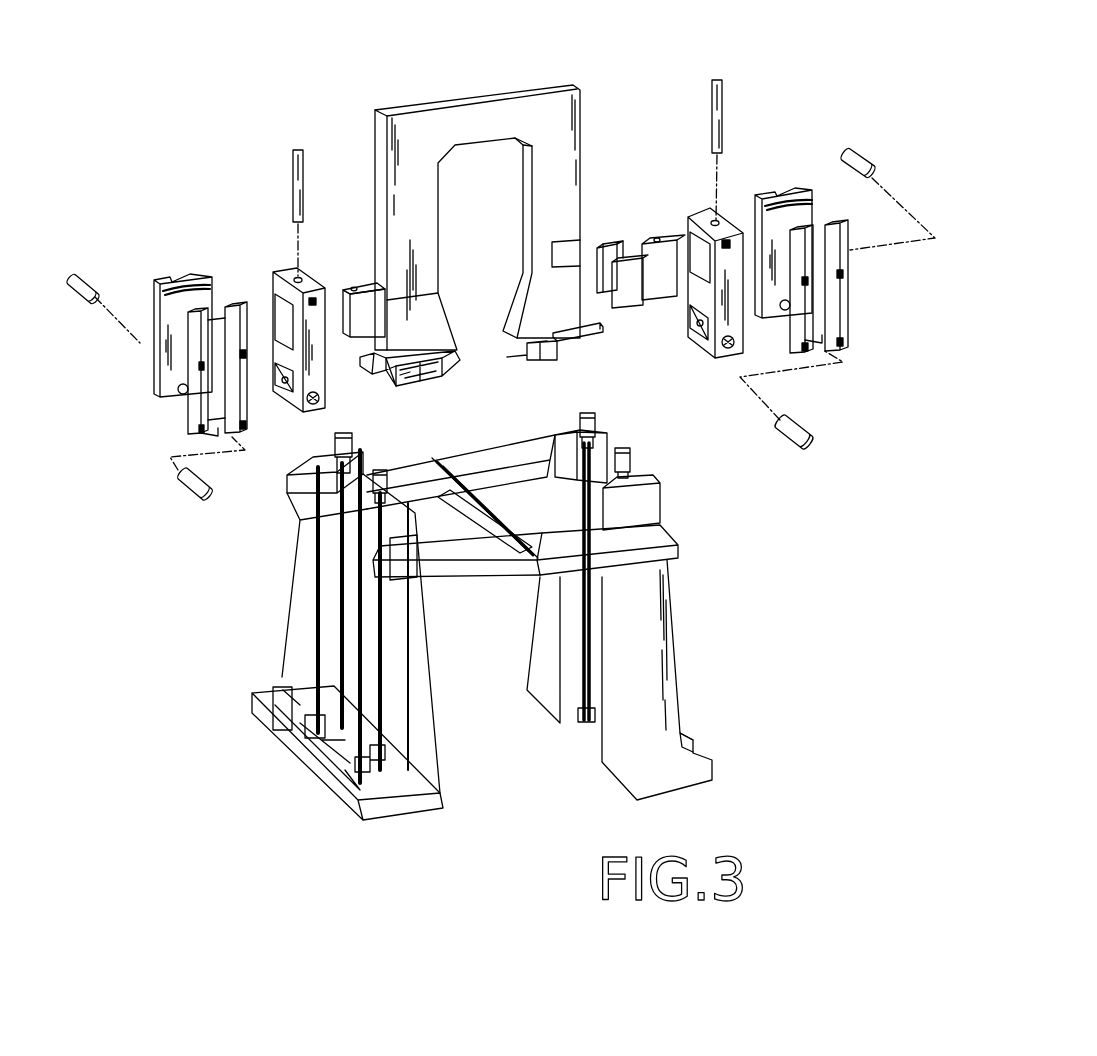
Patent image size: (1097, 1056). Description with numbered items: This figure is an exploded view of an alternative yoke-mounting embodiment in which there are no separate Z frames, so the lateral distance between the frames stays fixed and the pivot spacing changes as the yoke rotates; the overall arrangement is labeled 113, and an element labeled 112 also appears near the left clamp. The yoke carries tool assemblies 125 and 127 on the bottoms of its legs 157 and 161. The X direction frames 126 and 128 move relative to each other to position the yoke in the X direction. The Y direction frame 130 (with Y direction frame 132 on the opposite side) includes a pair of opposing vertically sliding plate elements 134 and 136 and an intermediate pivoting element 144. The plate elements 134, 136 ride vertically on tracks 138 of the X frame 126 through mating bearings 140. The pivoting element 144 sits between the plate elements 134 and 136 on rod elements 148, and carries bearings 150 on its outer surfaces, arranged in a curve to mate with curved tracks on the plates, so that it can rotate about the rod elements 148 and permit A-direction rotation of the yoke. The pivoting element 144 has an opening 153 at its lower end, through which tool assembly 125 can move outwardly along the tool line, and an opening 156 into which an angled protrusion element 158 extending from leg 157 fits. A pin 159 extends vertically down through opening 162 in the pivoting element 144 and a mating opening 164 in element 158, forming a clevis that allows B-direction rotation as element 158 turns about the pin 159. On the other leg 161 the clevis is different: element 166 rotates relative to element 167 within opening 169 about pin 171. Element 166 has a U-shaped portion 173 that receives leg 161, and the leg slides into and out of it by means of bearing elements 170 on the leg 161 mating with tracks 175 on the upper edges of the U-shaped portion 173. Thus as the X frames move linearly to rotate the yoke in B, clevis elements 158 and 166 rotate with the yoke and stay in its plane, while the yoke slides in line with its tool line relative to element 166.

The tool head assembly 113 is at (498, 76).
The leg 161 is at (571, 178).
The bearing elements 170 is at (568, 268).
The leg 157 is at (420, 238).
The mating opening 164 is at (347, 287).
The angled protrusion element 158 is at (375, 320).
The tool assembly 125 is at (453, 377).
The tool assembly 127 is at (557, 354).
The Y direction frame 130 is at (293, 237).
The plate element 134 is at (148, 305).
The bearings 140 is at (150, 343).
The guide bar 112 is at (250, 323).
The plate element 136 is at (250, 423).
The rod elements 148 is at (77, 277).
The bearings 150 is at (313, 289).
The opening 162 is at (303, 275).
The opening 156 is at (275, 294).
The opening 153 is at (283, 392).
The pivoting element 144 is at (330, 378).
The pin 159 is at (300, 150).
The Y direction frame 132 is at (813, 170).
The element 167 is at (723, 327).
The opening 169 is at (700, 240).
The pin 171 is at (724, 108).
The element 166 is at (663, 300).
The mating tracks 175 is at (643, 253).
The U-shaped portion 173 is at (612, 250).
The X direction frame 126 is at (454, 738).
The tracks 138 is at (350, 460).
The X direction frame 128 is at (695, 668).